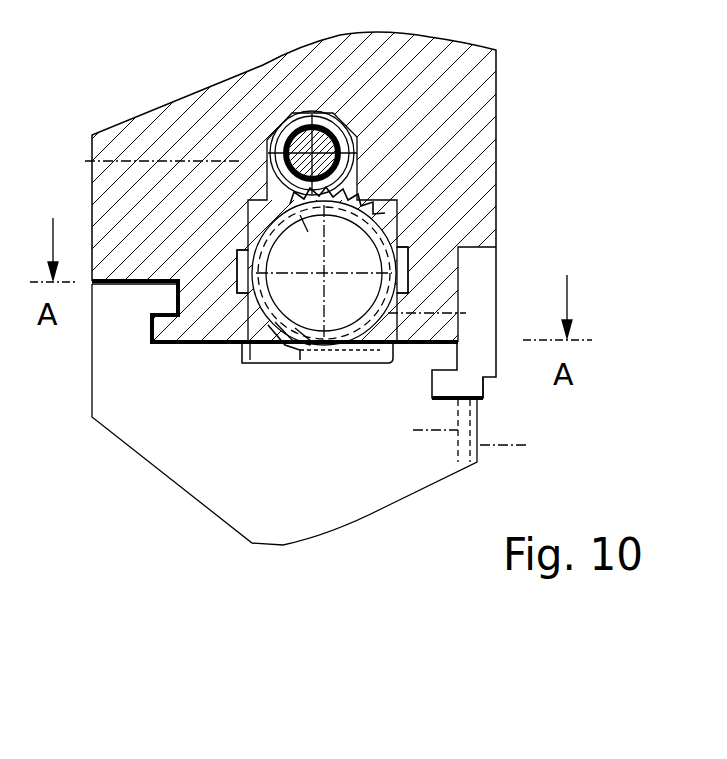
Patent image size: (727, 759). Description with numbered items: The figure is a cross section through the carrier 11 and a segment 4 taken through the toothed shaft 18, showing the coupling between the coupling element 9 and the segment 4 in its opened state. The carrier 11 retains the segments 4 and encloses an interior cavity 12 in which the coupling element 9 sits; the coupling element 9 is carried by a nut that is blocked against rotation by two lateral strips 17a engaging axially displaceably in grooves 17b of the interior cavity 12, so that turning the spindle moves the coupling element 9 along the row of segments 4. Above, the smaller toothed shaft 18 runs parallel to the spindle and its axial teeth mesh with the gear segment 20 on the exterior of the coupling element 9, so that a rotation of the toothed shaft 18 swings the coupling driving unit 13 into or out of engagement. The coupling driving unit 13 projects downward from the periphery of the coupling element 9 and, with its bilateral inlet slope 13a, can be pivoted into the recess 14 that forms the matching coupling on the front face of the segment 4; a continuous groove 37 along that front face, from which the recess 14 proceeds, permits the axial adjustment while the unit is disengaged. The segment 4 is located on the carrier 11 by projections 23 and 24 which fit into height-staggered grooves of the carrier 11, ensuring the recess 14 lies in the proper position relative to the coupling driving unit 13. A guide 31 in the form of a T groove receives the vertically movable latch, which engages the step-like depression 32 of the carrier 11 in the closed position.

The segment 4 is at (378, 495).
The coupling element 9 is at (380, 218).
The carrier 11 is at (475, 123).
The interior cavity 12 is at (267, 207).
The coupling driving unit 13 is at (268, 337).
The inlet slope 13a is at (290, 352).
The recess 14 is at (372, 352).
The lateral strip 17a is at (238, 316).
The groove 17b is at (240, 257).
The toothed shaft 18 is at (293, 130).
The gear segment 20 is at (337, 218).
The projection 23 is at (157, 298).
The projection 24 is at (443, 352).
The guide 31 is at (520, 448).
The depression 32 is at (485, 378).
The continuous groove 37 is at (253, 347).